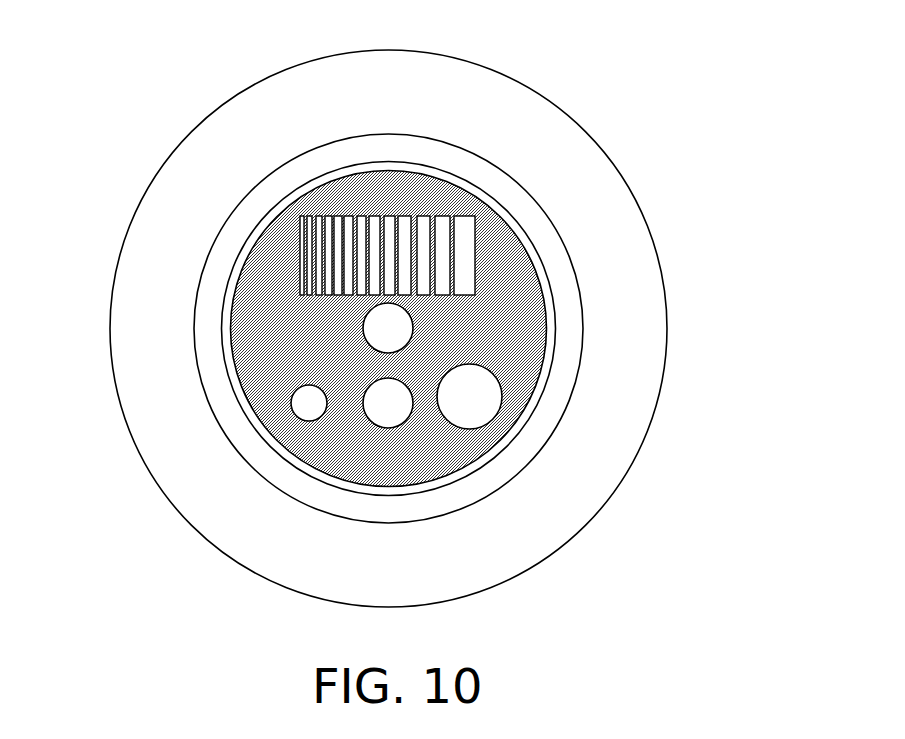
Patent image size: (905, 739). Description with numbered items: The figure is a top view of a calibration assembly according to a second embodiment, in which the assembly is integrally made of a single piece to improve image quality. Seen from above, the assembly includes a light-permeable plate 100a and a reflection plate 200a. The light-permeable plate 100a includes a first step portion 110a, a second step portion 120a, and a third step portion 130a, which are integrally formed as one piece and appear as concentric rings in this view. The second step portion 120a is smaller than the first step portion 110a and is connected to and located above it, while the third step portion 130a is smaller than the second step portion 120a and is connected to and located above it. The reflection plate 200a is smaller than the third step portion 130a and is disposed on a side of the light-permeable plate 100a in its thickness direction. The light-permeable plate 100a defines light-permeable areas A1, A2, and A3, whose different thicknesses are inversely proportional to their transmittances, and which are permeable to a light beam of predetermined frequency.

The light-permeable plate 100a is at (490, 328).
The first step portion 110a is at (637, 267).
The second step portion 120a is at (568, 324).
The third step portion 130a is at (509, 312).
The reflection plate 200a is at (488, 245).
The light-permeable area A1 is at (223, 325).
The light-permeable area A2 is at (210, 342).
The light-permeable area A3 is at (152, 378).